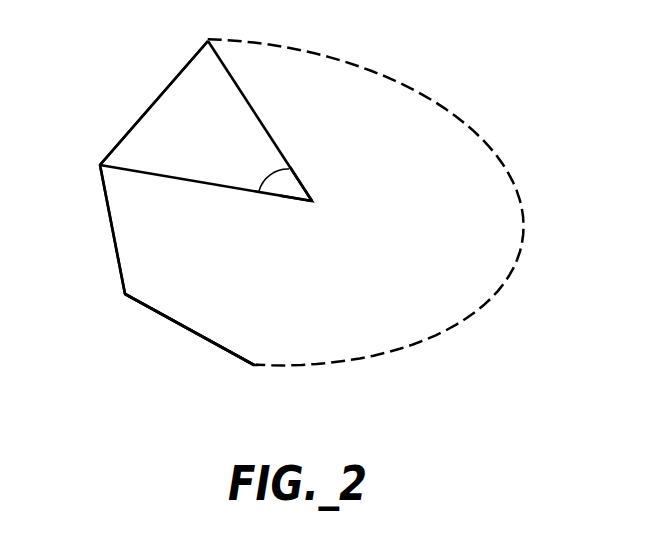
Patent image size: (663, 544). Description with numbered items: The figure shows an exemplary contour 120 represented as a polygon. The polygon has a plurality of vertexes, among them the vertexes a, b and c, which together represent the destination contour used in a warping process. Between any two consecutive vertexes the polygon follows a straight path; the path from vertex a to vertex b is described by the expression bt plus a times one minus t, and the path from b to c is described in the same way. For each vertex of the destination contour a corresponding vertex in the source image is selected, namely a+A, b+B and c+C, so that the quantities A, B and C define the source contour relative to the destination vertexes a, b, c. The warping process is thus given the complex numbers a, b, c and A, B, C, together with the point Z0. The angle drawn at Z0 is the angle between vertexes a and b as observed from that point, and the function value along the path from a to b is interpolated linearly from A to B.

The contour 120 is at (208, 342).
The displacement of vertex a A is at (160, 86).
The displacement of vertex b B is at (93, 220).
The displacement of vertex c C is at (177, 327).
The polygon vertex a is at (260, 121).
The polygon vertex b is at (206, 183).
The polygon vertex c is at (189, 320).
The observation point Z0 is at (308, 199).